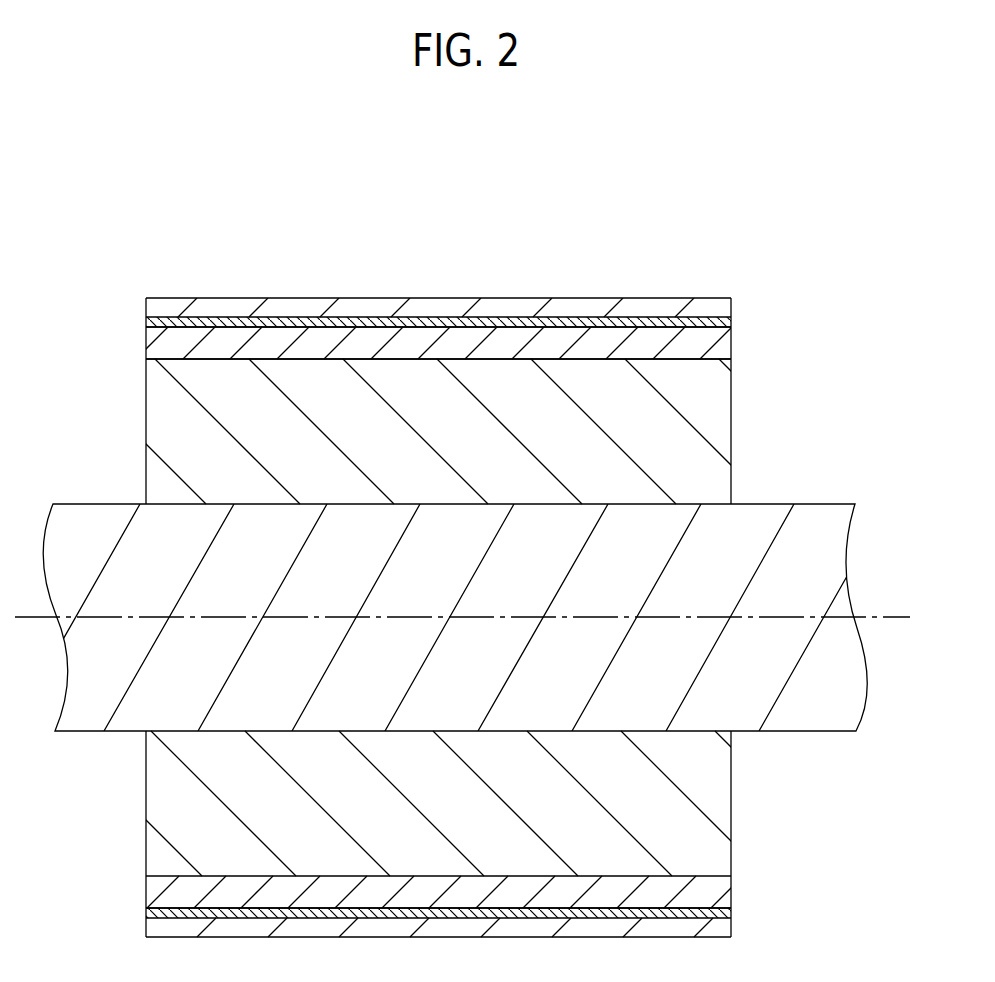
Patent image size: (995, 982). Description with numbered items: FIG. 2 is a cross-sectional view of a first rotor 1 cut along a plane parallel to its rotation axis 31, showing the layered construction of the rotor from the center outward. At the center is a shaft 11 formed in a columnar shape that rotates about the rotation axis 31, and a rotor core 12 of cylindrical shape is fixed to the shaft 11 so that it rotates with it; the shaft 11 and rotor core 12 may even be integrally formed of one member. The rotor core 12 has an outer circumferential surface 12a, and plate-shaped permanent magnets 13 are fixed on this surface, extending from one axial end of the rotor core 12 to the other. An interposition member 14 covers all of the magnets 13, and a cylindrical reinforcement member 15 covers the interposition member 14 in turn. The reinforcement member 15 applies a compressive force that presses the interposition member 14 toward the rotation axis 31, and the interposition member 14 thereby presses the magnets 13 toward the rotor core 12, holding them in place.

The first rotor 1 is at (668, 171).
The shaft 11 is at (95, 710).
The rotor core 12 is at (203, 368).
The outer circumferential surface 12a is at (657, 353).
The magnet 13 is at (305, 348).
The interposition member 14 is at (418, 320).
The reinforcement member 15 is at (573, 307).
The rotation axis 31 is at (760, 617).